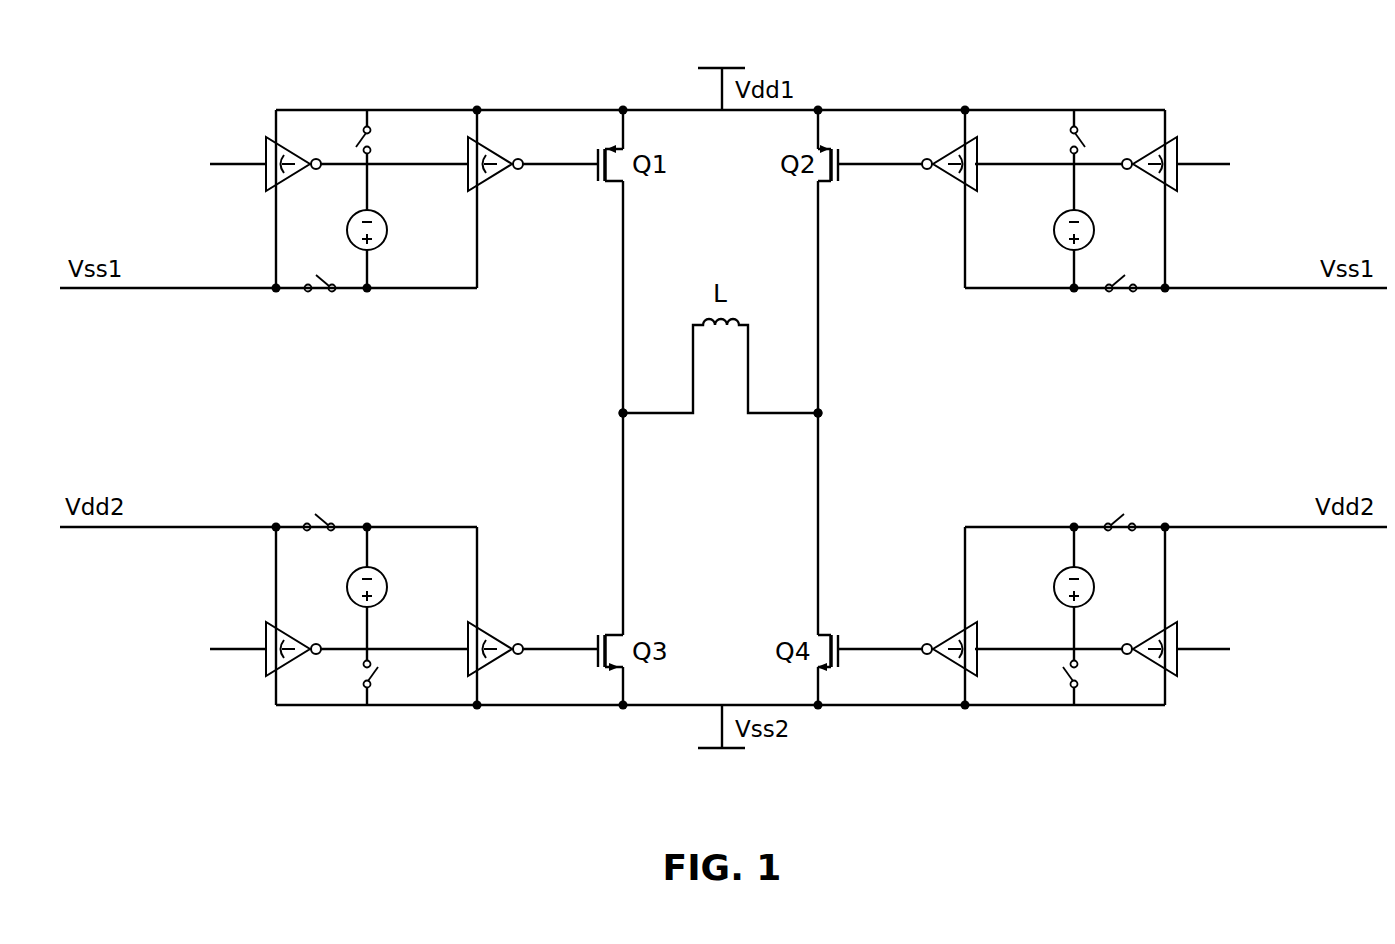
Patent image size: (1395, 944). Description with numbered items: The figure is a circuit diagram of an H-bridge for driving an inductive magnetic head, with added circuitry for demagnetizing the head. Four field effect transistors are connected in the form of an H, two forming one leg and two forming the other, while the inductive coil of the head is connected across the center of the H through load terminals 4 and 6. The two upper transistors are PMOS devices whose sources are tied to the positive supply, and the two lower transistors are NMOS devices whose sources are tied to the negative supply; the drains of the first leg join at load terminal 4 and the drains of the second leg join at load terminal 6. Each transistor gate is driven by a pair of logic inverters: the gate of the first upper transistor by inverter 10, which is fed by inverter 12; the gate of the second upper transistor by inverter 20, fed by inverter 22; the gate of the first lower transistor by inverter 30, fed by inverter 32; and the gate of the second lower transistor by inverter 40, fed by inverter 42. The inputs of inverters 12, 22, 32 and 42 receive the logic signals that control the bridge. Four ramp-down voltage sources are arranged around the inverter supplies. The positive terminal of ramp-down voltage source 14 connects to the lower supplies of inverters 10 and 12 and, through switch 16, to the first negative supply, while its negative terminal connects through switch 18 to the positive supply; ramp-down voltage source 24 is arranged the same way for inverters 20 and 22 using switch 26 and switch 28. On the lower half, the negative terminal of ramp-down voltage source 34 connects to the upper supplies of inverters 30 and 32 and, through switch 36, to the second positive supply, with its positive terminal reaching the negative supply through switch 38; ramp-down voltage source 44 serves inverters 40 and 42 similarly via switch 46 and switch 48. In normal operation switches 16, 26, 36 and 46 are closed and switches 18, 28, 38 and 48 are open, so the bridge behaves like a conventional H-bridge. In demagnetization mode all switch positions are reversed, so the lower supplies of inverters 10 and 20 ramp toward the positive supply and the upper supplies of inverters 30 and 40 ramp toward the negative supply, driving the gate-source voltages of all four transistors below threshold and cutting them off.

The load terminal 4 is at (620, 413).
The load terminal 6 is at (822, 413).
The inverter 10 is at (492, 180).
The inverter 12 is at (290, 180).
The ramp-down voltage source 14 is at (388, 228).
The switch 16 is at (318, 300).
The switch 18 is at (381, 138).
The inverter 20 is at (944, 178).
The inverter 22 is at (1143, 183).
The ramp-down voltage source 24 is at (1054, 228).
The switch 26 is at (1124, 299).
The switch 28 is at (1063, 139).
The inverter 30 is at (490, 633).
The inverter 32 is at (289, 630).
The ramp-down voltage source 34 is at (388, 585).
The switch 36 is at (310, 508).
The switch 38 is at (356, 676).
The inverter 40 is at (944, 635).
The inverter 42 is at (1148, 636).
The ramp-down voltage source 44 is at (1054, 586).
The switch 46 is at (1129, 508).
The switch 48 is at (1086, 673).